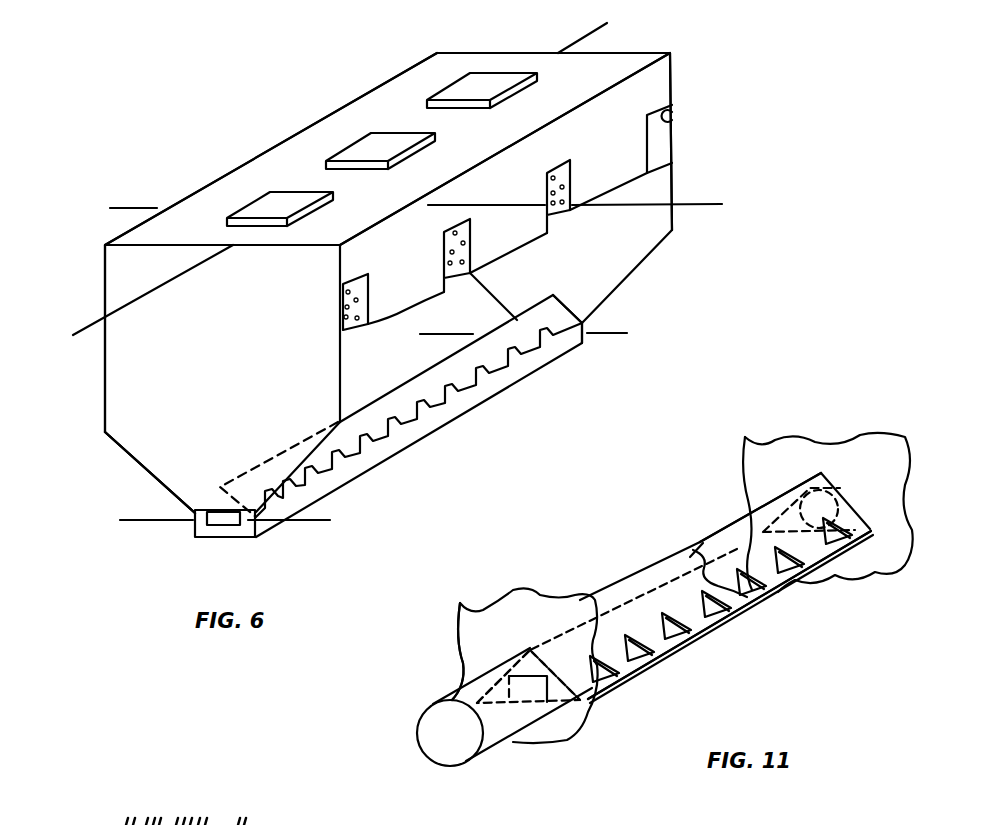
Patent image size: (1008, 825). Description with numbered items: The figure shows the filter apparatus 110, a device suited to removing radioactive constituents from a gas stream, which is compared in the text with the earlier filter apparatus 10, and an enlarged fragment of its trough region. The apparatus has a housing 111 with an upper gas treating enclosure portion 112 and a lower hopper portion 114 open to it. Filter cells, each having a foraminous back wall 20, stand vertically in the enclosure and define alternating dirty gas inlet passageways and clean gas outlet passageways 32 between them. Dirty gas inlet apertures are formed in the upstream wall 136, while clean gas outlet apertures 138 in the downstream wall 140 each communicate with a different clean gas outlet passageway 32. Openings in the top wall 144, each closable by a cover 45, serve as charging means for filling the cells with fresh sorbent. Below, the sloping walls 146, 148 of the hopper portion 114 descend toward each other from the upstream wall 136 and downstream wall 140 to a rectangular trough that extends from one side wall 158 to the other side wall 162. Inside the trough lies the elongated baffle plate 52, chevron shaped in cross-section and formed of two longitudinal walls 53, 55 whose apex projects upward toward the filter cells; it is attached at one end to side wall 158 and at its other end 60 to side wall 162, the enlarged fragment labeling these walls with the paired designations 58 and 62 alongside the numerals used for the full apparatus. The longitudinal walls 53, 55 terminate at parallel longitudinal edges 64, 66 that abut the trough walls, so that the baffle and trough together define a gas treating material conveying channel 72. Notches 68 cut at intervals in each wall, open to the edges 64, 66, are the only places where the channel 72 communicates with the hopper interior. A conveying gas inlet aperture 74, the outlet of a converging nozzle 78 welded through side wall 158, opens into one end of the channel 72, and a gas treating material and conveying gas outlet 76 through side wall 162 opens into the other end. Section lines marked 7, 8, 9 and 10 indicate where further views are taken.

In FIG. 6, the section line 7- 7 is at (148, 186).
In FIG. 6, the section line 8- 8 is at (148, 505).
In FIG. 6, the section line 9- 9 is at (413, 338).
In FIG. 6, the filter apparatus 10 is at (607, 23).
In FIG. 6, the back wall 20 is at (355, 293).
In FIG. 11, the back wall 20 is at (573, 707).
In FIG. 6, the clean gas outlet passageway 32 is at (660, 152).
In FIG. 6, the cover 45 is at (260, 212).
In FIG. 6, the elongated baffle plate 52 is at (382, 403).
In FIG. 11, the elongated baffle plate 52 is at (630, 577).
In FIG. 6, the longitudinal wall 53 is at (210, 500).
In FIG. 11, the longitudinal wall 53 is at (512, 665).
In FIG. 6, the longitudinal wall 55 is at (457, 373).
In FIG. 11, the longitudinal wall 55 is at (647, 597).
In FIG. 11, the hopper wall 58 is at (475, 662).
In FIG. 11, the end 60 is at (862, 505).
In FIG. 11, the side plate 62 is at (795, 460).
In FIG. 6, the longitudinal edge 64 is at (197, 515).
In FIG. 11, the longitudinal edge 64 is at (623, 617).
In FIG. 6, the longitudinal edge 66 is at (415, 422).
In FIG. 11, the longitudinal edge 66 is at (705, 630).
In FIG. 6, the notch 68 is at (513, 357).
In FIG. 11, the notch 68 is at (640, 650).
In FIG. 6, the gas treating material conveying channel 72 is at (383, 450).
In FIG. 11, the gas treating material conveying channel 72 is at (562, 690).
In FIG. 6, the conveying gas inlet aperture 74 is at (217, 520).
In FIG. 11, the conveying gas inlet aperture 74 is at (524, 693).
In FIG. 11, the gas treating material and conveying gas outlet 76 is at (825, 497).
In FIG. 11, the converging nozzle 78 is at (435, 734).
In FIG. 6, the filter apparatus 110 is at (183, 110).
In FIG. 6, the housing 111 is at (130, 110).
In FIG. 6, the gas treating enclosure portion 112 is at (92, 389).
In FIG. 6, the hopper portion 114 is at (142, 480).
In FIG. 6, the upstream wall 136 is at (95, 175).
In FIG. 6, the clean gas outlet aperture 138 is at (672, 116).
In FIG. 6, the downstream wall 140 is at (632, 97).
In FIG. 6, the top wall 144 is at (310, 145).
In FIG. 6, the sloping wall 146 is at (131, 456).
In FIG. 6, the sloping wall 148 is at (672, 230).
In FIG. 6, the side wall 158 is at (148, 272).
In FIG. 11, the side wall 158 is at (458, 651).
In FIG. 6, the side wall 162 is at (697, 70).
In FIG. 11, the side wall 162 is at (760, 507).